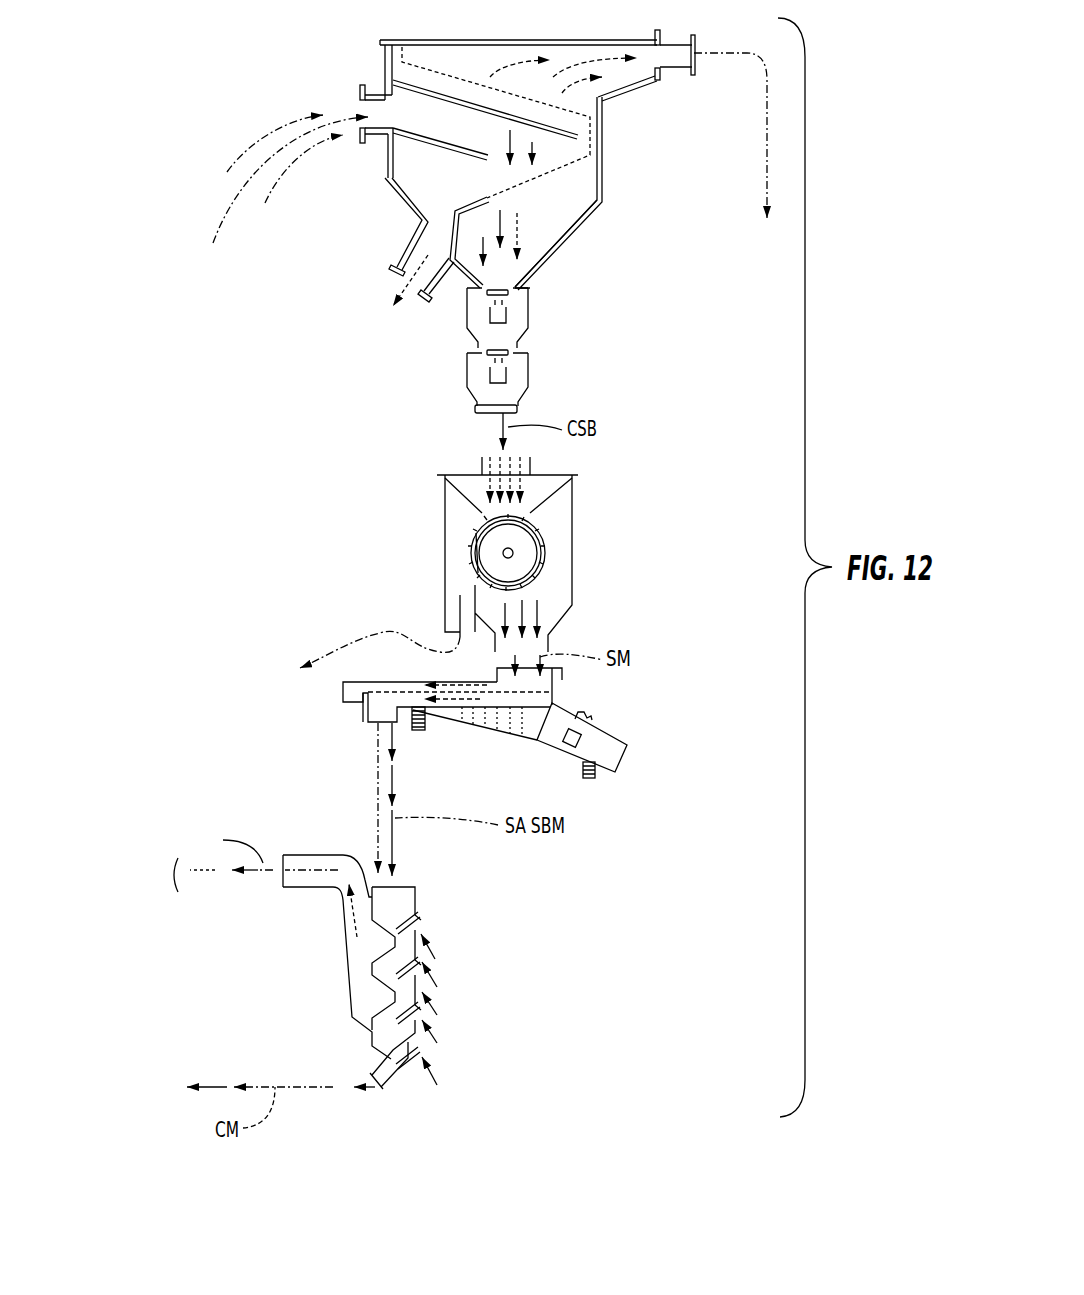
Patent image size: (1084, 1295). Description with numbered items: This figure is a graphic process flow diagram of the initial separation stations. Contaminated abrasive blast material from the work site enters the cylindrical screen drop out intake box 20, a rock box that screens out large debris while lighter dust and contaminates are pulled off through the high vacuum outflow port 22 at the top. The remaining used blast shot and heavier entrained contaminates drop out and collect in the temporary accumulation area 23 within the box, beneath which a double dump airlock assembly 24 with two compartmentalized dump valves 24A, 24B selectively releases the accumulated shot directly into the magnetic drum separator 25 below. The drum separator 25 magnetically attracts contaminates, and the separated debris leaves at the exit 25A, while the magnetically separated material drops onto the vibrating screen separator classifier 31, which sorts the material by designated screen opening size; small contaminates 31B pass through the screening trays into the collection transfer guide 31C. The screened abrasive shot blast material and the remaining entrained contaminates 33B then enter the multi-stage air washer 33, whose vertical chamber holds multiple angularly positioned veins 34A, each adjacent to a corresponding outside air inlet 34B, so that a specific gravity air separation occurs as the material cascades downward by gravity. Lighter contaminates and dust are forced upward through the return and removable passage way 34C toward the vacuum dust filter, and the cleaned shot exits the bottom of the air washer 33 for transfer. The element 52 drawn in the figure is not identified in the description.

The cylindrical screen drop out intake box 20 is at (633, 127).
The high vacuum outflow port 22 is at (680, 45).
The temporary accumulation area 23 is at (537, 235).
The double dump airlock assembly 24 is at (517, 350).
The dump valve 24A is at (490, 312).
The dump valve 24B is at (508, 373).
The magnetic drum separator 25 is at (487, 566).
The separated debris exit 25A is at (458, 640).
The vibrating screen separator classifier 31 is at (501, 736).
The small contaminates 31B is at (618, 748).
The collection transfer guide 31C is at (528, 700).
The air washer 33 is at (415, 897).
The entrained related contaminates 33B is at (378, 812).
The angularly positioned veins 34A is at (403, 935).
The outside air inlet 34B is at (383, 950).
The return and removable passage way 34C is at (348, 912).
The flow partition 52 is at (363, 695).